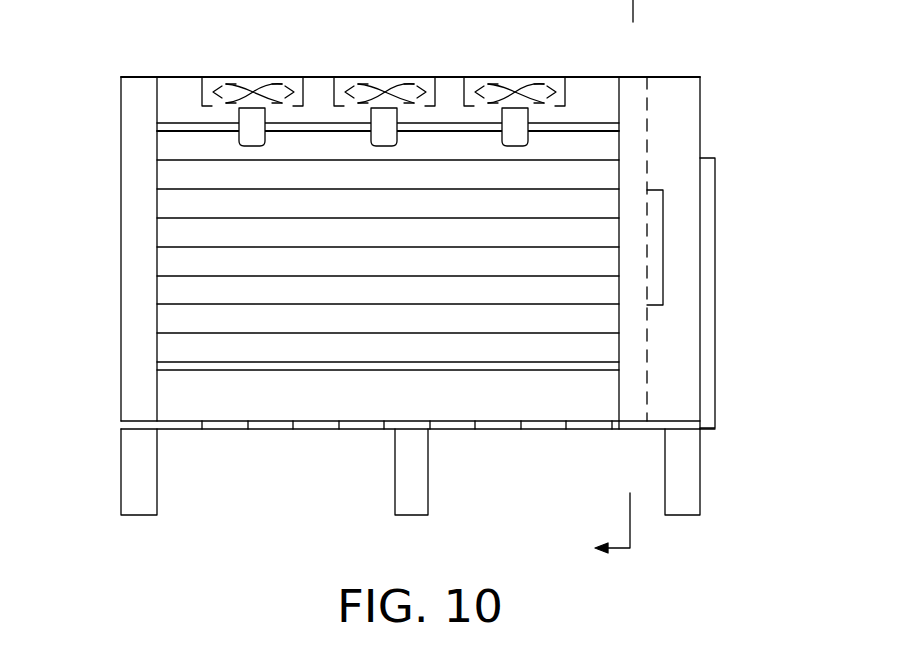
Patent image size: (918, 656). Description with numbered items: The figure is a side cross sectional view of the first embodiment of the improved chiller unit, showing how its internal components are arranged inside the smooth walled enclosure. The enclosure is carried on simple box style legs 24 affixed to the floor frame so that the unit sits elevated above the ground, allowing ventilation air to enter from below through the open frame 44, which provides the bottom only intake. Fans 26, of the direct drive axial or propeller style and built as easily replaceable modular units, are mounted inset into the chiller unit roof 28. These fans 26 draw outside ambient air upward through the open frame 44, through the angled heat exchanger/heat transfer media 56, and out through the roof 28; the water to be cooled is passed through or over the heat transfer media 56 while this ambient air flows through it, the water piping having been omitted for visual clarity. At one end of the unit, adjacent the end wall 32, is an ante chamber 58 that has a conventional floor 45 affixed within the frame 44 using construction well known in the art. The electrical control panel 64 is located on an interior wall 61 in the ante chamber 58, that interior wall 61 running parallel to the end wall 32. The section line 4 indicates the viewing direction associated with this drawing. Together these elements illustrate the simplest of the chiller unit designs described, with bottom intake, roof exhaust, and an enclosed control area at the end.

The equipment rack enclosure 4 is at (708, 175).
The legs 24 is at (121, 473).
The fans 26 is at (553, 84).
The chiller unit roof 28 is at (143, 77).
The end wall 32 is at (700, 360).
The open frame 44 is at (248, 429).
The conventional floor 45 is at (645, 430).
The heat exchanger/heat transfer media 56 is at (192, 245).
The ante chamber 58 is at (683, 200).
The interior wall 61 is at (648, 108).
The electrical control panel 64 is at (655, 275).